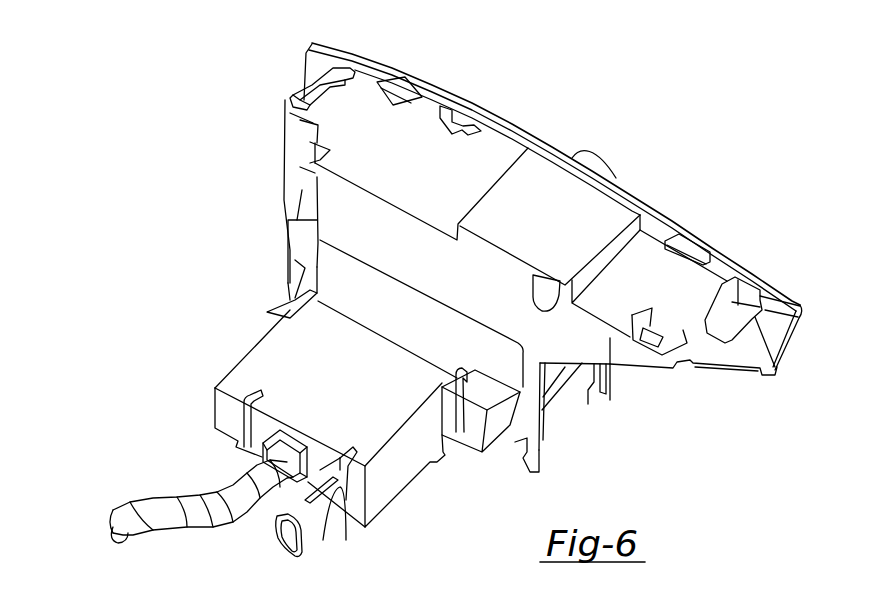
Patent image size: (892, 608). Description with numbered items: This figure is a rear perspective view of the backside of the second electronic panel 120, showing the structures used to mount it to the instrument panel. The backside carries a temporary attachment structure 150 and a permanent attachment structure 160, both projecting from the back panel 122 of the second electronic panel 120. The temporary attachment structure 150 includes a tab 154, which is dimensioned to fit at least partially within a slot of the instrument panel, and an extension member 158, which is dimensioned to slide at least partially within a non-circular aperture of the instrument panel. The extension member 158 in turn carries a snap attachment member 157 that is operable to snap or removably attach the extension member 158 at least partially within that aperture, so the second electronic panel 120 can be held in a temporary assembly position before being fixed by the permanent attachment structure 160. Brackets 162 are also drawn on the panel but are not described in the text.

The second electronic panel 120 is at (653, 190).
The back panel 122 is at (473, 278).
The temporary attachment structure 150 is at (205, 385).
The tab 154 is at (295, 300).
The snap attachment member 157 is at (345, 540).
The extension member 158 is at (273, 527).
The permanent attachment structure 160 is at (465, 181).
The retention bracket 162 is at (295, 88).